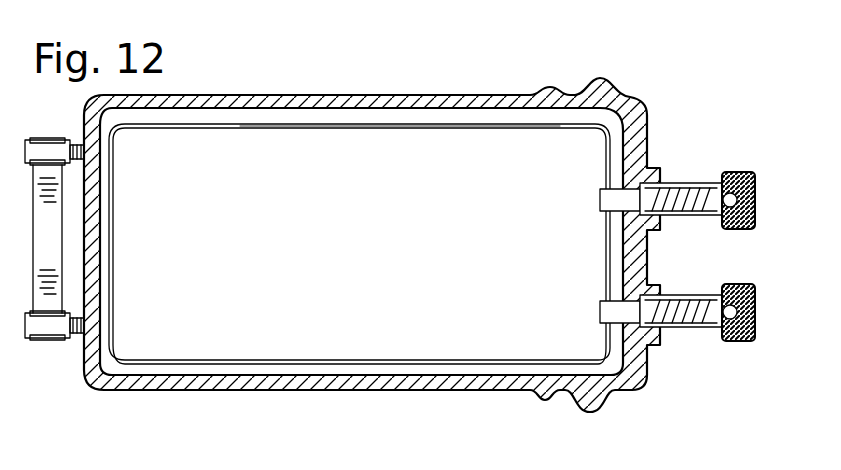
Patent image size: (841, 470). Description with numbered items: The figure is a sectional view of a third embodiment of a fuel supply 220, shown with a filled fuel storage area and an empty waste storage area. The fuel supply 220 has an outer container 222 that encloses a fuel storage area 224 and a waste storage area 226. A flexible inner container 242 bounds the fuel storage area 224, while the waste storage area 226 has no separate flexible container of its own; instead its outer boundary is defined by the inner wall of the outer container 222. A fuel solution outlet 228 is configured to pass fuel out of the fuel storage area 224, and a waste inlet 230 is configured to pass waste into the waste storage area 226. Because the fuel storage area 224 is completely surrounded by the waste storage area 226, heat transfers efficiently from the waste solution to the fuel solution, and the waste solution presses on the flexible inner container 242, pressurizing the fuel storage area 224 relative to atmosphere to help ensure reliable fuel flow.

The fuel supply 220 is at (380, 69).
The outer container 222 is at (433, 96).
The fuel storage area 224 is at (390, 247).
The waste storage area 226 is at (125, 118).
The fuel solution outlet 228 is at (683, 170).
The waste inlet 230 is at (682, 281).
The flexible inner container 242 is at (247, 126).